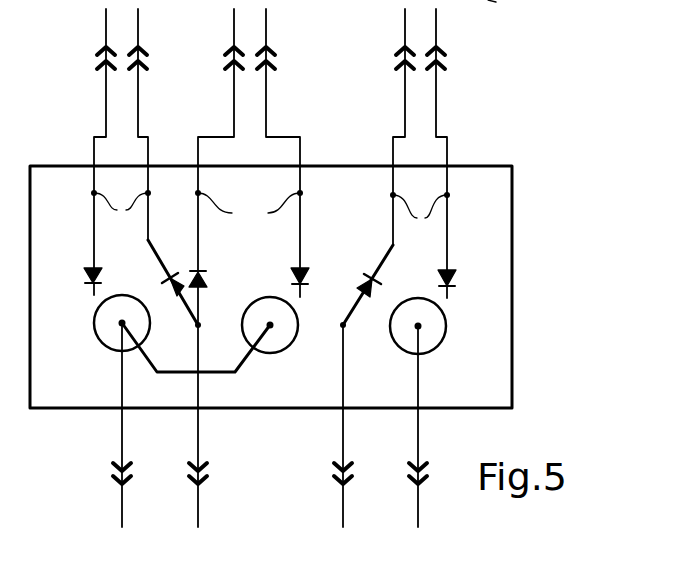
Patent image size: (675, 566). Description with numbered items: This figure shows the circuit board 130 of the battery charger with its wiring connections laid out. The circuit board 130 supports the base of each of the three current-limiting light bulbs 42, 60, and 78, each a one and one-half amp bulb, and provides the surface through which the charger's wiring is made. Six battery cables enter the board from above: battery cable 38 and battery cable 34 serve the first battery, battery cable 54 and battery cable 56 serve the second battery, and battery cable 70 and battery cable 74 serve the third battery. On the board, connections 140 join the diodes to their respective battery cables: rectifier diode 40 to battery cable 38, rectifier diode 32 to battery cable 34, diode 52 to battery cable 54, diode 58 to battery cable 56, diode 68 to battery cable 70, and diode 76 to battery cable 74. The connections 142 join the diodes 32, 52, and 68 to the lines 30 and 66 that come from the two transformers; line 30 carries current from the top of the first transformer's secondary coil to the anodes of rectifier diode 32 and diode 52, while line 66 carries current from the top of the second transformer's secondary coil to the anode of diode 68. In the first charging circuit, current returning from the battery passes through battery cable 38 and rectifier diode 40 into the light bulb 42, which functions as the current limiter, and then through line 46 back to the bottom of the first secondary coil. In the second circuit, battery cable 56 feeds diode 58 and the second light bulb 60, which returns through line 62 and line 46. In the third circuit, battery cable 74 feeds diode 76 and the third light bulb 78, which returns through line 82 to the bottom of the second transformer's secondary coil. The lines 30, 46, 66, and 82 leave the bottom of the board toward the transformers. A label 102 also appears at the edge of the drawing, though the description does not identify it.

The line 30 is at (198, 397).
The rectifier diode 32 is at (163, 282).
The battery cable 34 is at (138, 113).
The battery cable 38 is at (106, 100).
The rectifier diode 40 is at (86, 275).
The light bulb 42 is at (96, 338).
The line 46 is at (122, 387).
The diode 52 is at (207, 280).
The battery cable 54 is at (234, 111).
The battery cable 56 is at (266, 96).
The diode 58 is at (292, 283).
The light bulb 60 is at (296, 339).
The line 62 is at (181, 376).
The line 66 is at (343, 390).
The diode 68 is at (366, 278).
The battery cable 70 is at (405, 95).
The battery cable 74 is at (436, 97).
The diode 76 is at (455, 279).
The light bulb 78 is at (440, 338).
The line 82 is at (418, 386).
The controller 102 is at (496, 2).
The circuit board 130 is at (512, 374).
The connections 140 is at (270, 215).
The connections 142 is at (198, 326).